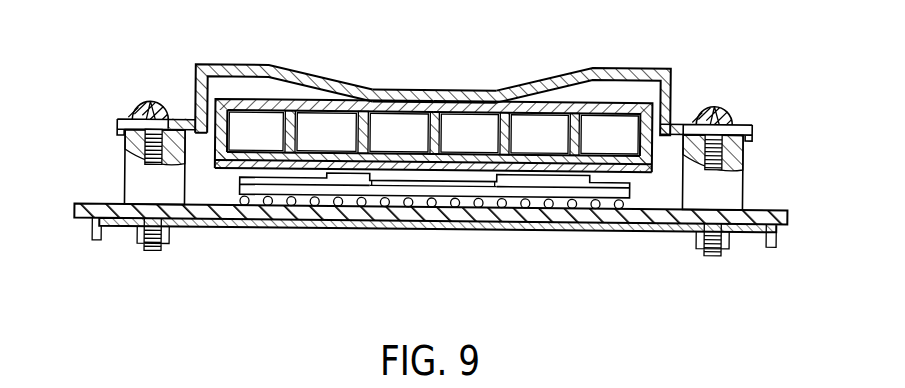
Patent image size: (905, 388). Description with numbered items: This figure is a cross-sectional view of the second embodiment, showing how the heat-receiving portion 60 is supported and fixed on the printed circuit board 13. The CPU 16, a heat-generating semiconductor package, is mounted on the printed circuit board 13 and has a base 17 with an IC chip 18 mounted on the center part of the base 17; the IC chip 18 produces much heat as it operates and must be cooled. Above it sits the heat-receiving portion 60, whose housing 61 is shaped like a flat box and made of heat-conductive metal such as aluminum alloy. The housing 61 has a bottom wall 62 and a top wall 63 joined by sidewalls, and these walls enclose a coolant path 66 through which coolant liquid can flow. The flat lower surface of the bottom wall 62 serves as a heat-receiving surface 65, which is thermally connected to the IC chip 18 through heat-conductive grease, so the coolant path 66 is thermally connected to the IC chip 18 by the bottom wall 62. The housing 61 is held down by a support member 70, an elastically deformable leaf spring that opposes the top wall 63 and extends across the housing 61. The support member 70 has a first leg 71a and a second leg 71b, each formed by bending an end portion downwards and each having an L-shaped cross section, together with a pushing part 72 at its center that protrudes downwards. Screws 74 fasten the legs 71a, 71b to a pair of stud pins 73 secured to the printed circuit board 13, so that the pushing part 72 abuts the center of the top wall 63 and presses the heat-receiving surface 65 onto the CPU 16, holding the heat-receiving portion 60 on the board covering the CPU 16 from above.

The printed circuit board 13 is at (259, 212).
The CPU 16 is at (431, 244).
The base 17 is at (388, 208).
The IC chip 18 is at (445, 183).
The heat-receiving portion 60 is at (620, 98).
The housing 61 is at (282, 106).
The bottom wall 62 is at (541, 172).
The top wall 63 is at (537, 106).
The heat-receiving surface 65 is at (326, 174).
The coolant path 66 is at (342, 110).
The support member 70 is at (230, 72).
The first leg 71a is at (685, 123).
The second leg 71b is at (183, 120).
The pushing part 72 is at (445, 90).
The stud pins 73 is at (137, 177).
The screws 74 is at (142, 110).